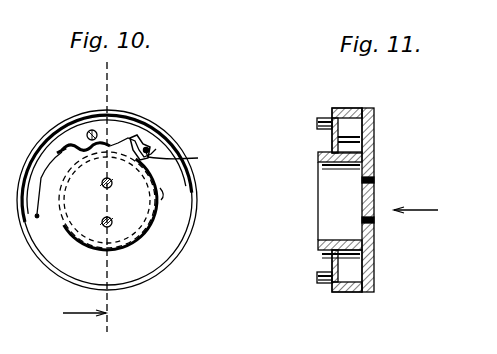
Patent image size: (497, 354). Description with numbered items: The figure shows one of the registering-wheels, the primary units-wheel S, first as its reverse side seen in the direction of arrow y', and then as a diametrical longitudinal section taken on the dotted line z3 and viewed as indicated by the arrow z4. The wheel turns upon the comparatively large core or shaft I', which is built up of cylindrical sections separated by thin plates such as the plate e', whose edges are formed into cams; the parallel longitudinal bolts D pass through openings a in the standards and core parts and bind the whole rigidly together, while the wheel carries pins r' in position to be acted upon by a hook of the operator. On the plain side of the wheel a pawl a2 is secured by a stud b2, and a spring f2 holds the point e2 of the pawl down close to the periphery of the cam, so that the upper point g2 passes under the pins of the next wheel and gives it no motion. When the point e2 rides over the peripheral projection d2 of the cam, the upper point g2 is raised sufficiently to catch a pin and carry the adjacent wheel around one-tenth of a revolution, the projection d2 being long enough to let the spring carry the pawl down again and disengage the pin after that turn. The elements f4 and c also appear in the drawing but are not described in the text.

In FIG. 10, the stud b2 is at (91, 130).
In FIG. 10, the dotted line z3 is at (119, 197).
In FIG. 10, the pawl a2 is at (124, 136).
In FIG. 10, the upper point of the pawl g2 is at (148, 136).
In FIG. 10, the primary registering units-wheel S is at (107, 168).
In FIG. 11, the primary registering units-wheel S is at (375, 200).
In FIG. 10, the spring wire f4 is at (180, 161).
In FIG. 10, the spring f2 is at (48, 185).
In FIG. 10, the core or shaft I' is at (108, 201).
In FIG. 11, the core or shaft I' is at (340, 200).
In FIG. 10, the point of the pawl e2 is at (138, 153).
In FIG. 10, the thin plate e' is at (80, 211).
In FIG. 10, the parallel longitudinal bolts D is at (112, 187).
In FIG. 10, the peripheral projection d2 is at (162, 194).
In FIG. 10, the arrow z4 is at (84, 322).
In FIG. 11, the openings a is at (374, 181).
In FIG. 11, the chamber c is at (338, 227).
In FIG. 11, the pins r' is at (316, 193).
In FIG. 11, the arrow y' is at (416, 219).